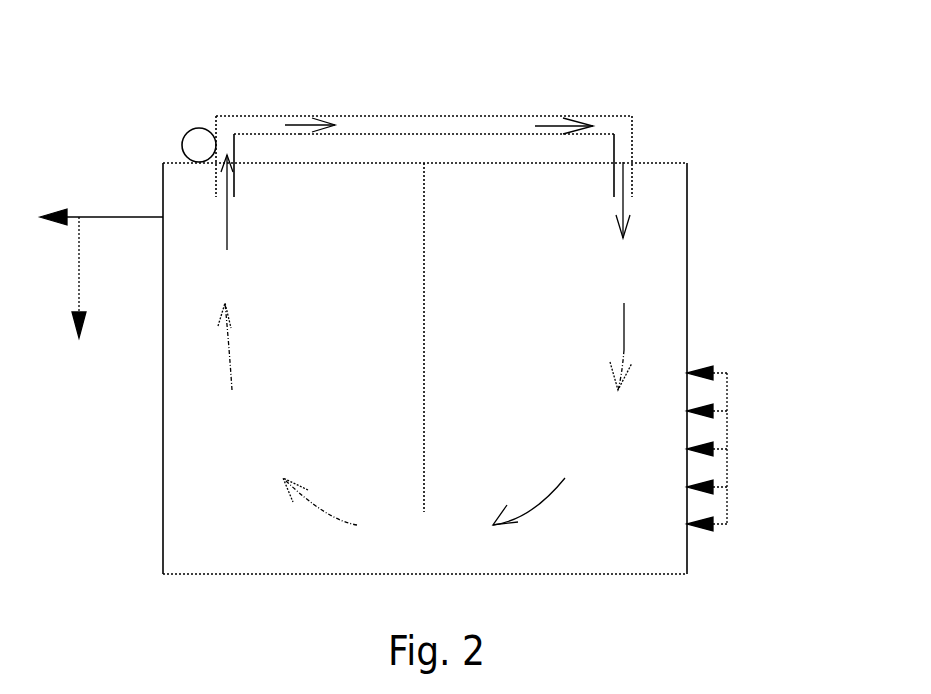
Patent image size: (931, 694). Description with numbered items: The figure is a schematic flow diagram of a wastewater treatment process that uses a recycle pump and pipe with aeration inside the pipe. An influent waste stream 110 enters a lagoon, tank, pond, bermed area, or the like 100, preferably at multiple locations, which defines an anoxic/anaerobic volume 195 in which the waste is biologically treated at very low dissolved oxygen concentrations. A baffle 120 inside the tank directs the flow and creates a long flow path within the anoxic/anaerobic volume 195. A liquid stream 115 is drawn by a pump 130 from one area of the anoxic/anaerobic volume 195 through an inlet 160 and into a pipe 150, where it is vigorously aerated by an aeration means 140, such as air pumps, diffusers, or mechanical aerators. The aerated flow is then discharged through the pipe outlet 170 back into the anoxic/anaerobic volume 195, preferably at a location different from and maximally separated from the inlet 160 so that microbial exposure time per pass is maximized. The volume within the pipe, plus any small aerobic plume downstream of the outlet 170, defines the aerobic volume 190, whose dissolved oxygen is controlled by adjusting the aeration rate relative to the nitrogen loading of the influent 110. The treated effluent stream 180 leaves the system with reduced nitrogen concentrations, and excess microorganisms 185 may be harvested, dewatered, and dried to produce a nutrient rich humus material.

The lagoon, tank, pond, bermed area, or the like 100 is at (700, 155).
The influent waste stream 110 is at (756, 448).
The liquid stream 115 is at (254, 272).
The baffle 120 is at (452, 328).
The pump 130 is at (160, 147).
The aeration means 140 is at (206, 101).
The pipe 150 is at (495, 92).
The inlet 160 is at (259, 163).
The pipe outlet 170 is at (589, 253).
The treated effluent stream 180 is at (102, 240).
The excess microorganisms 185 is at (80, 299).
The aerobic volume 190 is at (439, 83).
The anoxic/anaerobic volume 195 is at (424, 523).